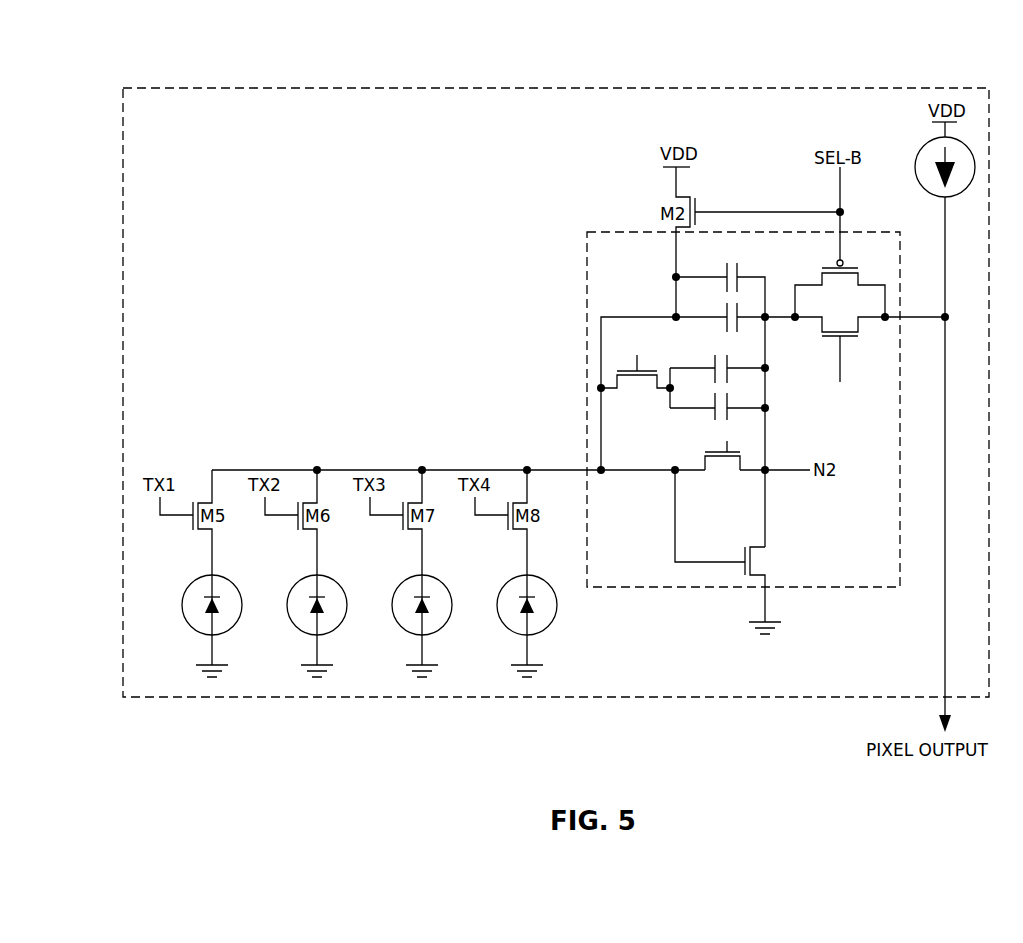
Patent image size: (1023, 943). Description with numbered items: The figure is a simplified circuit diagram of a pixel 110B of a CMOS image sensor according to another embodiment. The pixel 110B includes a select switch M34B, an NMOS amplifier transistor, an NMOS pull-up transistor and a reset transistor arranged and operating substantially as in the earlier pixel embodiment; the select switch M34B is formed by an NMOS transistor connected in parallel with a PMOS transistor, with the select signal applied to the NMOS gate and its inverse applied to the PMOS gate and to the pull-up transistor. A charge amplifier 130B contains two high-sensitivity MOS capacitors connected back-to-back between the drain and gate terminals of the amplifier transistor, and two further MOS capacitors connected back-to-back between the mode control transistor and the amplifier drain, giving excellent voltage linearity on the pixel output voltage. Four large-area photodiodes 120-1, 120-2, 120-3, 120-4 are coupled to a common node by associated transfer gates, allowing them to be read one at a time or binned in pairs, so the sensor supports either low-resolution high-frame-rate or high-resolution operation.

The pixel 110B is at (175, 84).
The charge amplifier 130B is at (580, 257).
The photodiode 120-1 is at (191, 626).
The photodiode 120-2 is at (338, 626).
The photodiode 120-3 is at (443, 627).
The photodiode 120-4 is at (548, 626).
The select switch M34B is at (812, 263).